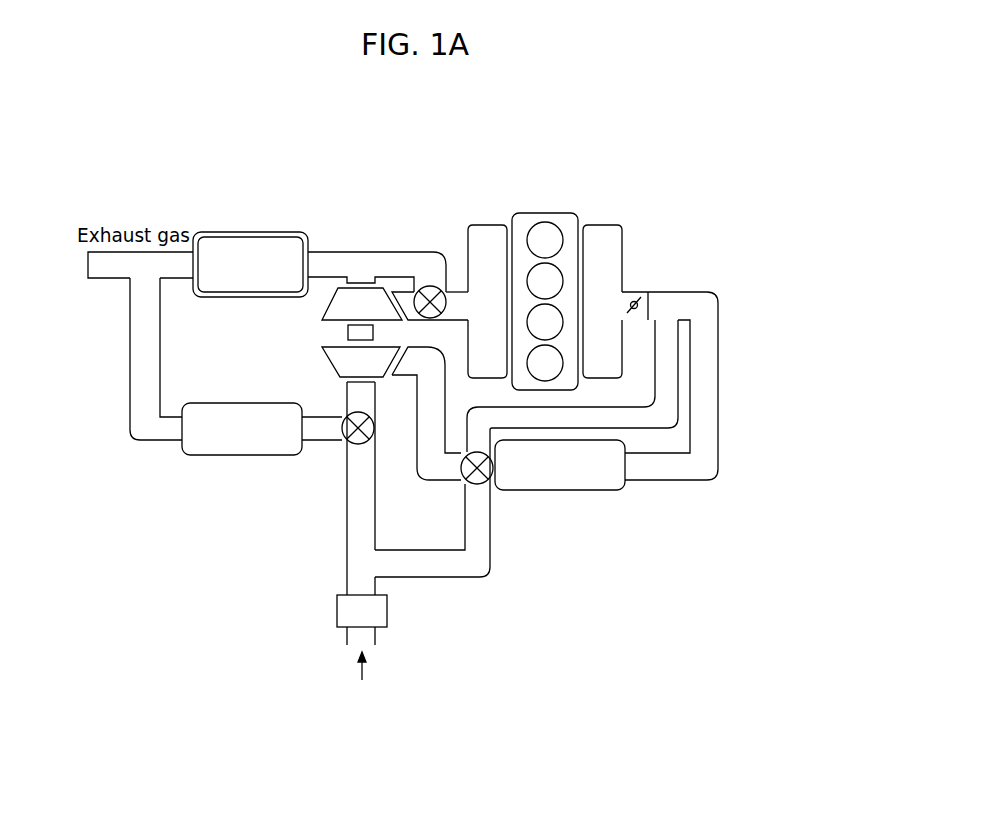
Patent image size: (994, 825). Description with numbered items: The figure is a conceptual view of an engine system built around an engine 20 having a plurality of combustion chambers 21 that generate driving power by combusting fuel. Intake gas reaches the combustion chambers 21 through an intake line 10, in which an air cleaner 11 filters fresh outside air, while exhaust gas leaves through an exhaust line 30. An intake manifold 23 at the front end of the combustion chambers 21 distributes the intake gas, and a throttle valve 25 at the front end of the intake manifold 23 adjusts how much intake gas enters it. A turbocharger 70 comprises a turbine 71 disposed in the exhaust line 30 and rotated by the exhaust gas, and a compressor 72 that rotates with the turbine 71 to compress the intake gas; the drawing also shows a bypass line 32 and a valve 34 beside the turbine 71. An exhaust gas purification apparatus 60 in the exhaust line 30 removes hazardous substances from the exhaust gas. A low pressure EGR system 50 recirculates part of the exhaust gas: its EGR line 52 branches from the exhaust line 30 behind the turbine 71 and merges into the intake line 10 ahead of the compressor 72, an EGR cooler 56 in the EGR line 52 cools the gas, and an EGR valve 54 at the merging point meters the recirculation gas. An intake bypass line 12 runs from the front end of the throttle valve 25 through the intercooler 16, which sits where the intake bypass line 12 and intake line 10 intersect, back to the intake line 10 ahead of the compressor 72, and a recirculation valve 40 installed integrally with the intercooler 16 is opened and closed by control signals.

The intake line 10 is at (377, 397).
The air cleaner 11 is at (337, 608).
The intake bypass line 12 is at (492, 546).
The intercooler 16 is at (560, 491).
The engine 20 is at (614, 284).
The combustion chamber 21 is at (563, 322).
The intake manifold 23 is at (597, 226).
The throttle valve 25 is at (641, 281).
The exhaust line 30 is at (403, 292).
The bypass line 32 is at (403, 252).
The bypass valve 34 is at (430, 286).
The recirculation valve 40 is at (477, 486).
The exhaust gas recirculation system 50 is at (236, 424).
The EGR line 52 is at (126, 364).
The EGR valve 54 is at (336, 468).
The EGR cooler 56 is at (236, 456).
The exhaust gas purification apparatus 60 is at (249, 232).
The turbocharger 70 is at (300, 332).
The turbine 71 is at (330, 309).
The compressor 72 is at (326, 352).